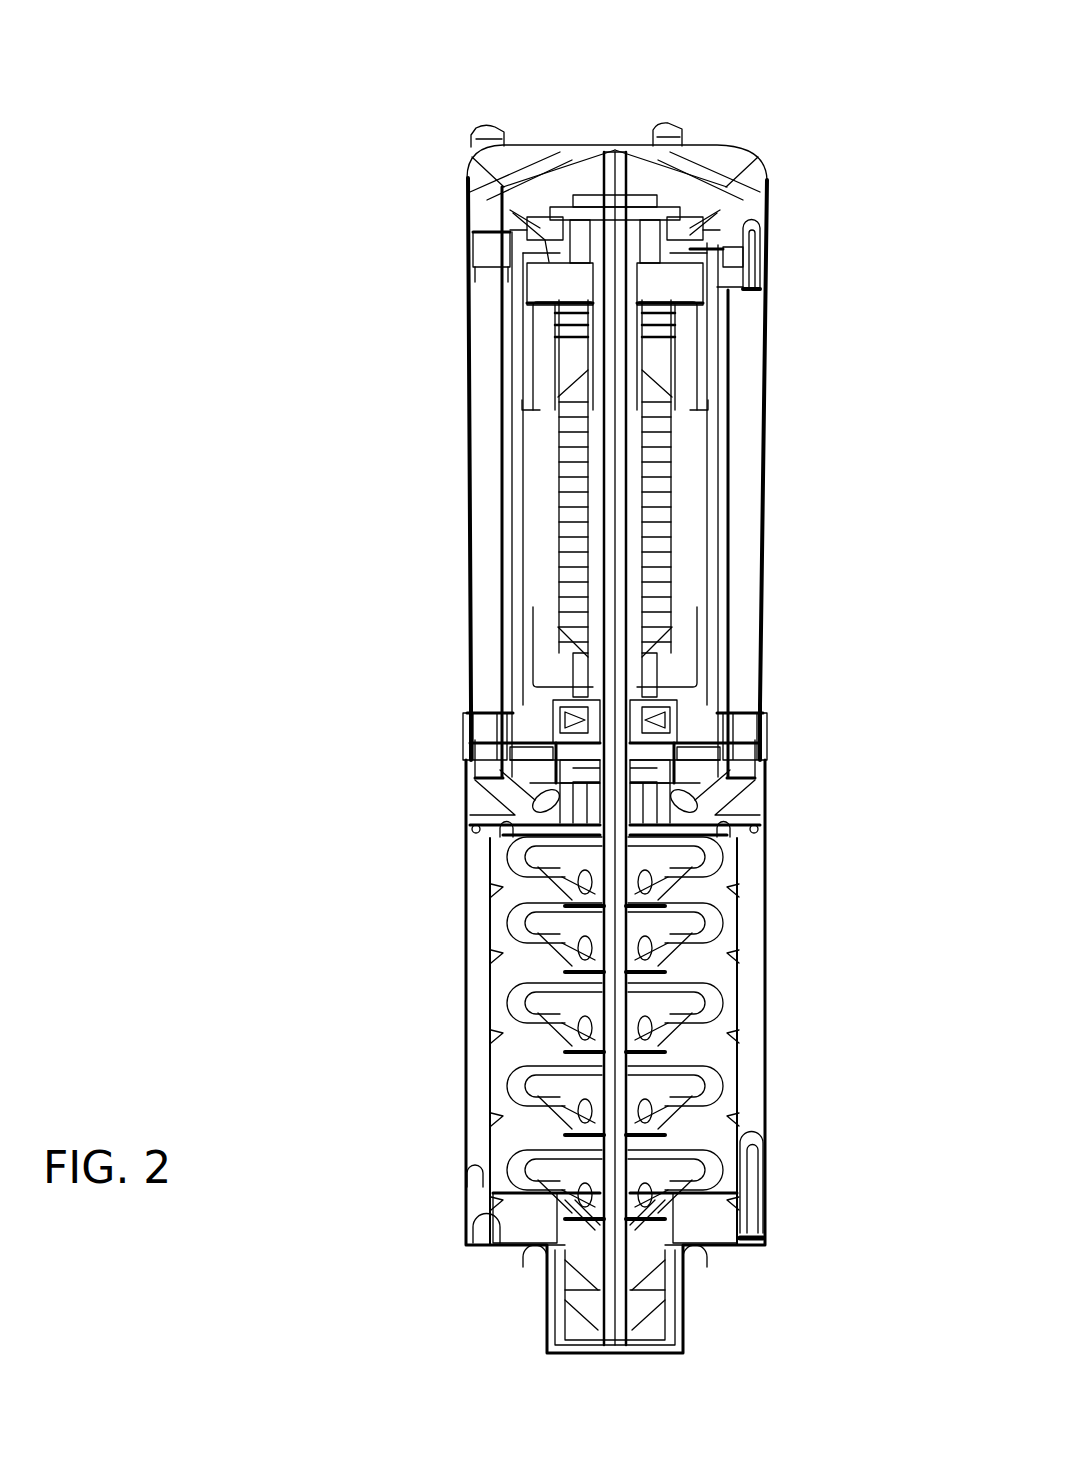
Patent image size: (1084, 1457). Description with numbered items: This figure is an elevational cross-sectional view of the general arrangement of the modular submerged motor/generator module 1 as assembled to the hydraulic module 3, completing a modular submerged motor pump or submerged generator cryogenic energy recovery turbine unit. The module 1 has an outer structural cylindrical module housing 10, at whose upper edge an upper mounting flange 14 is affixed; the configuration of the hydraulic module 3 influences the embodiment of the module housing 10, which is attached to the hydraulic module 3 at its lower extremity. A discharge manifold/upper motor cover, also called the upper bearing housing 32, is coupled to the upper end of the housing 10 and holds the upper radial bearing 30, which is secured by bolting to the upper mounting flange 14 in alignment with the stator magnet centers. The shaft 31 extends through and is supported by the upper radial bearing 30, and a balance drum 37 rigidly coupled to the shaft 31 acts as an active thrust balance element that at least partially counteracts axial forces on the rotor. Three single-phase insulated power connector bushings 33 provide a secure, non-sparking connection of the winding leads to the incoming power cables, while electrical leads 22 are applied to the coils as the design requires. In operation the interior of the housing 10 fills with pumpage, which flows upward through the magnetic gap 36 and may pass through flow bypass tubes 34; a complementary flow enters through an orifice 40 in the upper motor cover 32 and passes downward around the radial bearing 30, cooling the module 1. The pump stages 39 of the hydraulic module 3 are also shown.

The modular submerged motor/generator module 1 is at (537, 503).
The hydraulic module 3 is at (755, 943).
The module housing 10 is at (725, 340).
The upper mounting flange 14 is at (760, 292).
The electrical leads 22 is at (545, 290).
The upper radial bearing 30 is at (650, 235).
The shaft 31 is at (610, 443).
The upper bearing housing 32 is at (740, 187).
The insulated power connector bushings 33 is at (485, 135).
The flow bypass tubes 34 is at (495, 362).
The magnetic gap 36 is at (668, 500).
The balance drum 37 is at (658, 775).
The pump stages / impellers 39 is at (610, 1025).
The orifice 40 is at (568, 146).